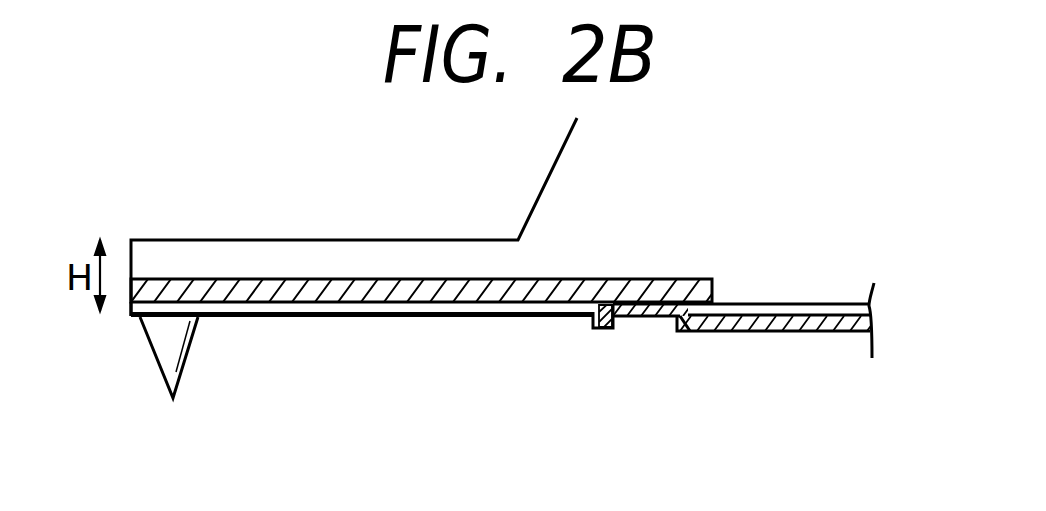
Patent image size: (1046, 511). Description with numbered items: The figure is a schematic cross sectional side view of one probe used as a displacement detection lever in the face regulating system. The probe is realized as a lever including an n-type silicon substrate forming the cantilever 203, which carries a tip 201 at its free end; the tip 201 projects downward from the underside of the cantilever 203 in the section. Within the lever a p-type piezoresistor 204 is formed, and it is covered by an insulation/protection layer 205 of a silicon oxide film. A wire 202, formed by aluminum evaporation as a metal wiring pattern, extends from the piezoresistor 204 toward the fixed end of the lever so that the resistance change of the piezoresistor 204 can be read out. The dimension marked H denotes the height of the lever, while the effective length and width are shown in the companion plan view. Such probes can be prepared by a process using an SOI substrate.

The tip 201 is at (160, 370).
The wire 202 is at (741, 322).
The cantilever 203 is at (393, 248).
The piezoresistor 204 is at (258, 302).
The insulation/protection layer 205 is at (381, 311).